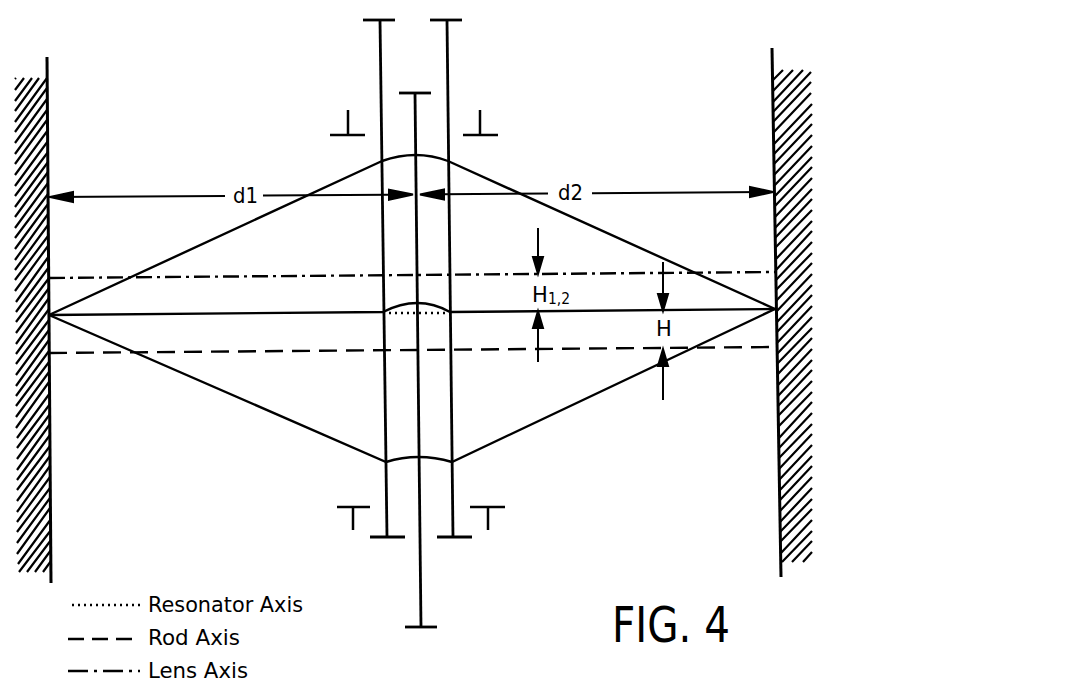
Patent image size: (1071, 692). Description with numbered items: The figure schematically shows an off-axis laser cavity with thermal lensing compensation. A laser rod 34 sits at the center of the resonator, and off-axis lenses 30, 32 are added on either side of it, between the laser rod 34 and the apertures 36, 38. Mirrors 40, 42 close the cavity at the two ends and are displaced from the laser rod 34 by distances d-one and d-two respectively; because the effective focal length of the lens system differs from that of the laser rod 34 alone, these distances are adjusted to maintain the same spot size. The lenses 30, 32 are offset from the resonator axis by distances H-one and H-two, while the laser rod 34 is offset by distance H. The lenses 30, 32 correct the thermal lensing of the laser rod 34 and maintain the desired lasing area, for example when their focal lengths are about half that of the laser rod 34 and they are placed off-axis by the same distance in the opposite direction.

The off-axis lens 30 is at (380, 51).
The off-axis lens 32 is at (449, 53).
The laser rod 34 is at (410, 93).
The aperture 36 is at (347, 126).
The aperture 38 is at (484, 126).
The mirror 40 is at (47, 80).
The mirror 42 is at (772, 58).